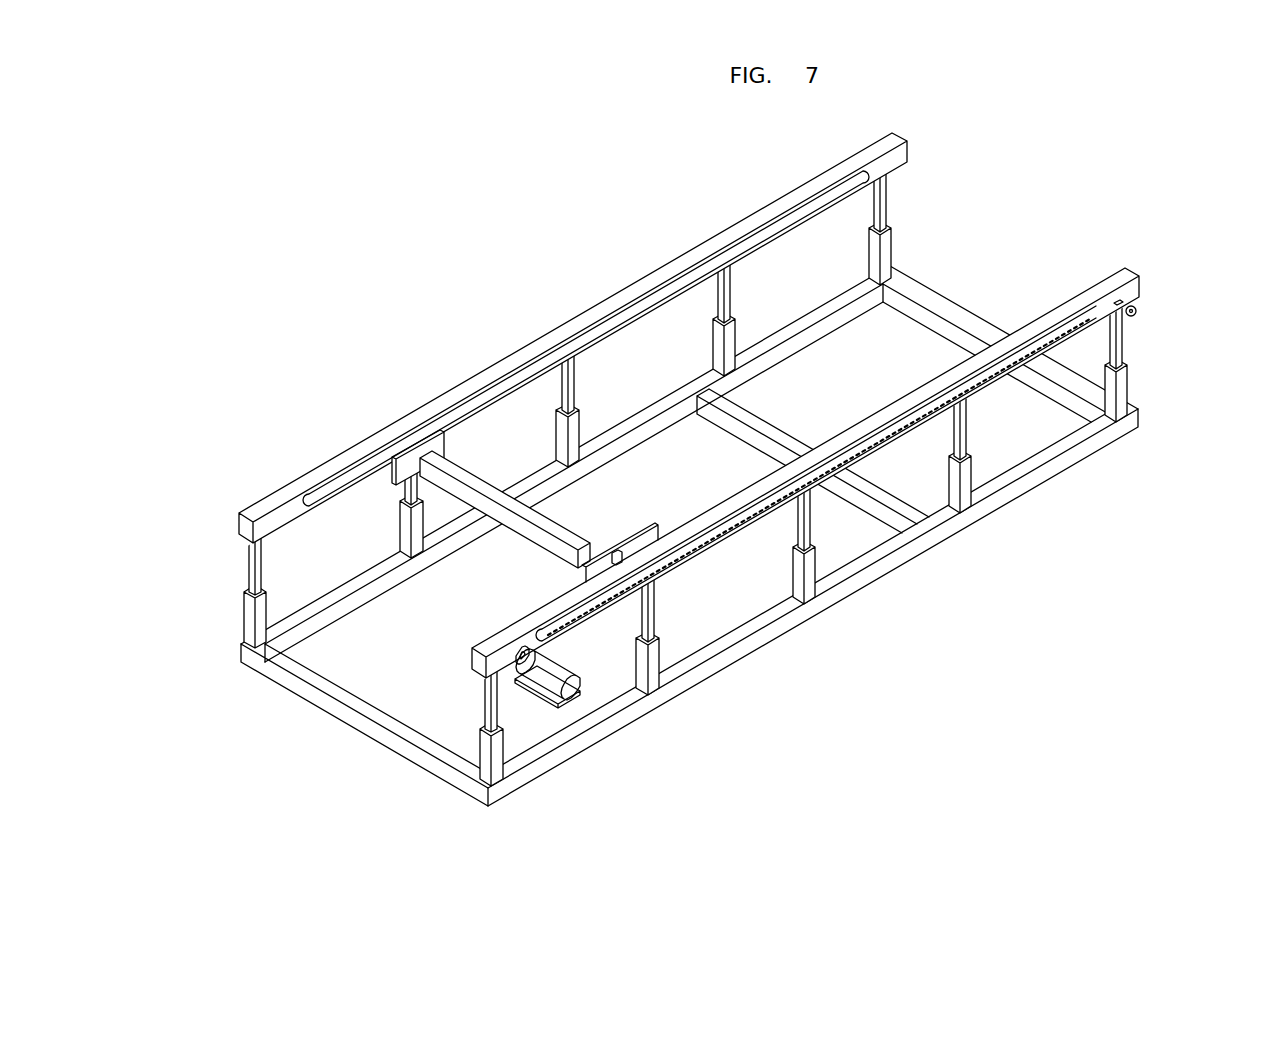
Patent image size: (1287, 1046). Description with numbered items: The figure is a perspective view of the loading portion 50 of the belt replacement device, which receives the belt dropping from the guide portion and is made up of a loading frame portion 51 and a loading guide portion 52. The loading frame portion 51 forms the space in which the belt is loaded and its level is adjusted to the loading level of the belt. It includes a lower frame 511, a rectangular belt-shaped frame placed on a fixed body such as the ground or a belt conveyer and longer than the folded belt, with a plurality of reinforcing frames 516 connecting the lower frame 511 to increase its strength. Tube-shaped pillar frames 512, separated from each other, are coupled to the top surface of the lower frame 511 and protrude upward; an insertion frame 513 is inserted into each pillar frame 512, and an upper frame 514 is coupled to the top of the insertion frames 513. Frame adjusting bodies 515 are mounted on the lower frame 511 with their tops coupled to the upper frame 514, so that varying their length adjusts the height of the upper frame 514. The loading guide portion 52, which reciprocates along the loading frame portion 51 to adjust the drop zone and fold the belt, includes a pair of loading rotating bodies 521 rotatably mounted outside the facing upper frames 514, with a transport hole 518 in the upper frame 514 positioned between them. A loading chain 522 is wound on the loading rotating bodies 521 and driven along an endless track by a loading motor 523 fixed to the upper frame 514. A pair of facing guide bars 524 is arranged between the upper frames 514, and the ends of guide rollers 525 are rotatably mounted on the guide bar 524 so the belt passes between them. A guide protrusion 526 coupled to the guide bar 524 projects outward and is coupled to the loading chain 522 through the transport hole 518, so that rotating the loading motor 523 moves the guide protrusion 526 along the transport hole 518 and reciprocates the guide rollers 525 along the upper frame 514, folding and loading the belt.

The loading portion 50 is at (692, 488).
The loading frame portion 51 is at (692, 488).
The lower frame 511 is at (357, 705).
The pillar frame 512 is at (1127, 393).
The insertion frame 513 is at (1128, 350).
The upper frame 514 is at (840, 178).
The frame adjusting body 515 is at (793, 578).
The reinforcing frame 516 is at (883, 522).
The transport hole 518 is at (1062, 330).
The loading guide portion 52 is at (674, 439).
The loading rotating body 521 is at (545, 672).
The loading chain 522 is at (735, 527).
The loading motor 523 is at (527, 676).
The guide bar 524 is at (413, 452).
The guide roller 525 is at (488, 470).
The guide protrusion 526 is at (520, 647).